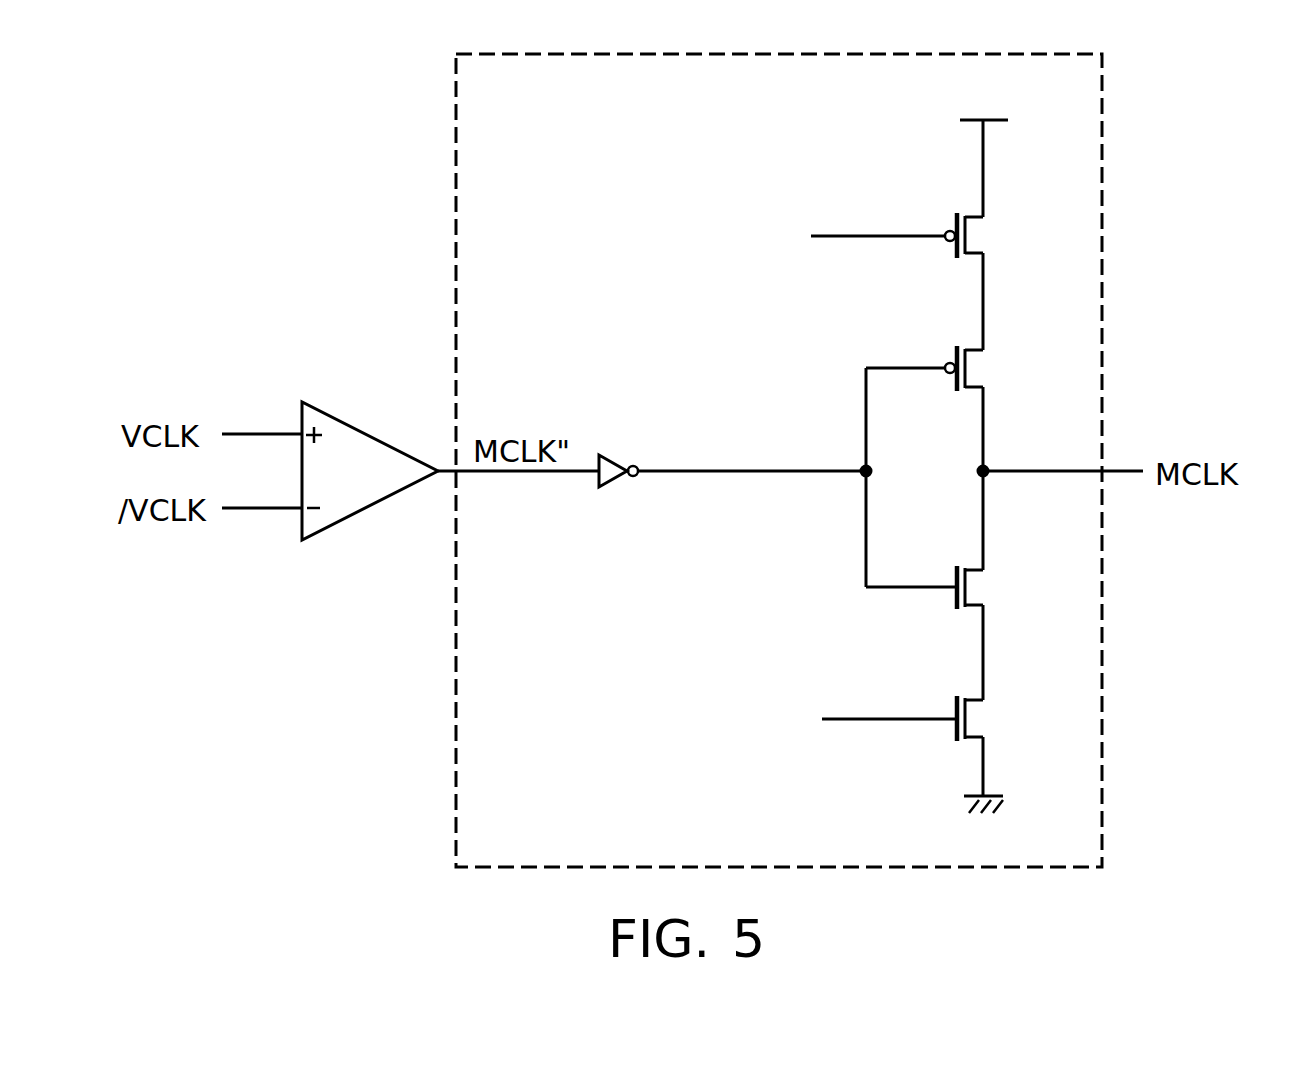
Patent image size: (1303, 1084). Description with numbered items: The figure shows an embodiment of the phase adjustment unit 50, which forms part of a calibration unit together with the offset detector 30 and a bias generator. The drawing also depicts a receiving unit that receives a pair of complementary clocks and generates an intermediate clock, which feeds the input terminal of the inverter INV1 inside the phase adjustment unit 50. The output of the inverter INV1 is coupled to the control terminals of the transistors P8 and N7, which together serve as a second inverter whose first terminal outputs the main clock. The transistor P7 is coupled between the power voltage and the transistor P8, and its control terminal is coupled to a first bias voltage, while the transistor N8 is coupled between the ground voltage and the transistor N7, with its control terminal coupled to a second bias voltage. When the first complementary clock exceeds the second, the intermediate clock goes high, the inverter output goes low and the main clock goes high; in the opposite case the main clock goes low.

The offset detector 30 is at (372, 435).
The phase adjustment unit 50 is at (1102, 125).
The inverter INV1 is at (617, 452).
The transistor P7 is at (917, 235).
The transistor P8 is at (944, 368).
The transistor N7 is at (946, 587).
The transistor N8 is at (924, 718).